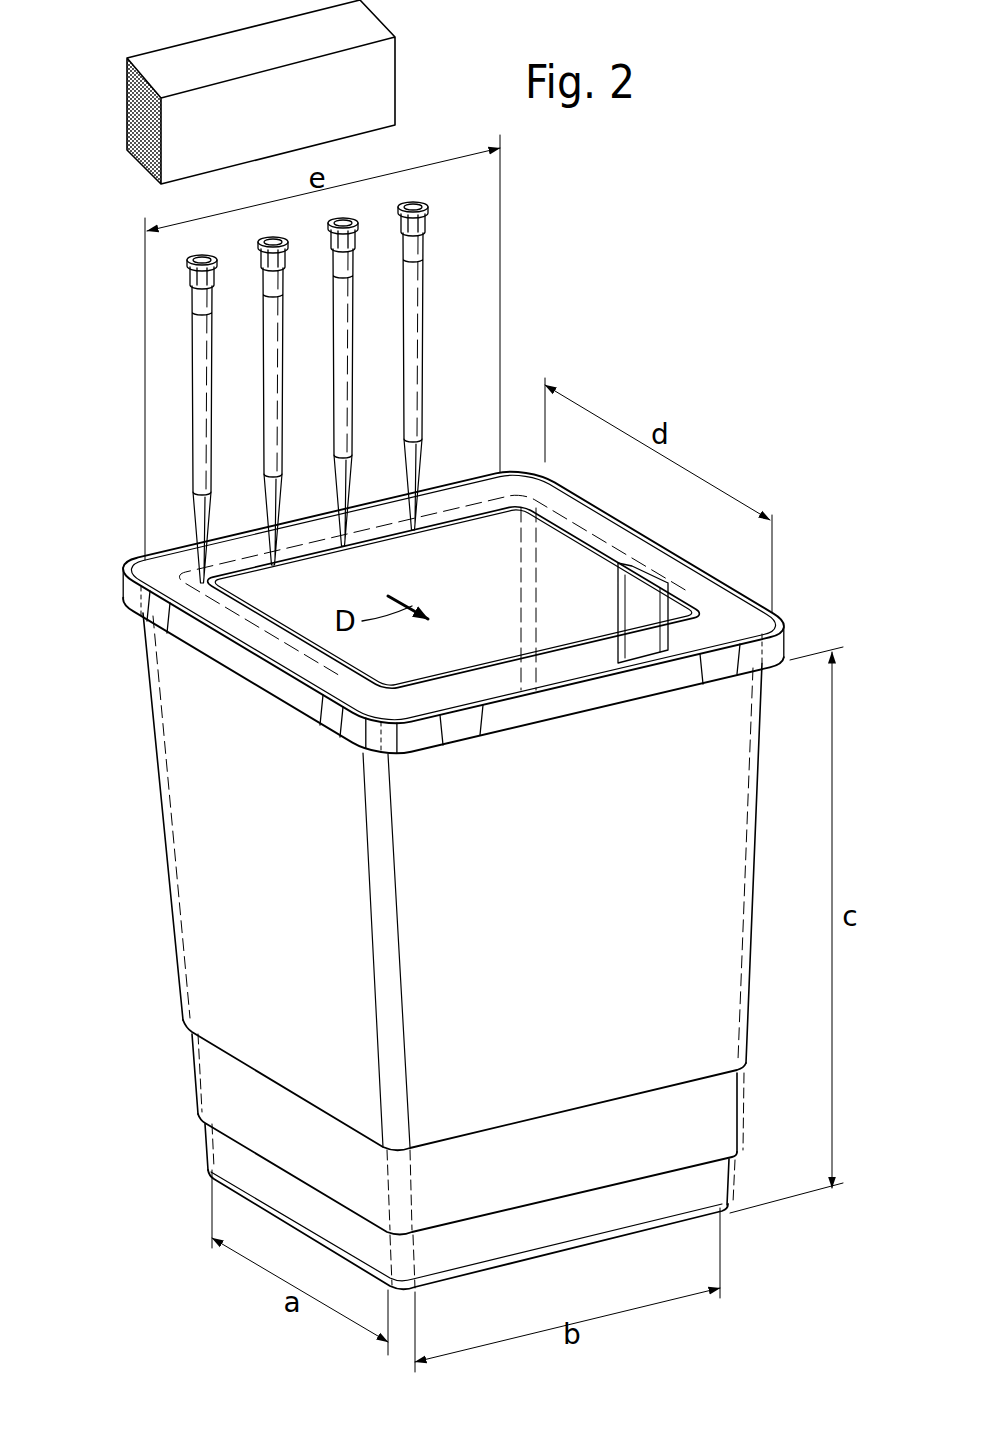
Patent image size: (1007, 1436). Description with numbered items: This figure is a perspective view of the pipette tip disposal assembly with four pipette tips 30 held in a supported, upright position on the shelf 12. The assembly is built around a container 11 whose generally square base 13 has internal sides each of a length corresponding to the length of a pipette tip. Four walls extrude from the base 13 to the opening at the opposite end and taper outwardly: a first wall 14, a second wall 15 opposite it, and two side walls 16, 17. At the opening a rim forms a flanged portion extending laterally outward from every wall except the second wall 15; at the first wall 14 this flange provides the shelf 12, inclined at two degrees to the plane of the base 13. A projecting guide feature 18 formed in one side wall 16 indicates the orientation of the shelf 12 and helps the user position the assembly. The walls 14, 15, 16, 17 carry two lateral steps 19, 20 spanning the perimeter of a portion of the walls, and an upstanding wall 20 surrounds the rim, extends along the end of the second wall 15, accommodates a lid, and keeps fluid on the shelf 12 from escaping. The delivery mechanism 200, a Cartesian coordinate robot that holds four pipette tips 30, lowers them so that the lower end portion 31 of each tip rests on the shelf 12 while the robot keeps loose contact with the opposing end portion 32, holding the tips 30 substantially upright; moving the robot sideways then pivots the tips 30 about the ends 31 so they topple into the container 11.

The container 11 is at (450, 874).
The shelf 12 is at (245, 568).
The base 13 is at (572, 1247).
The first wall 14 is at (317, 662).
The second wall 15 is at (683, 943).
The side wall 16 is at (588, 560).
The side wall 17 is at (205, 898).
The projecting guide feature 18 is at (650, 595).
The lateral step 19 is at (258, 1070).
The upstanding wall 20 is at (205, 636).
The pipette tip 30 is at (333, 387).
The lower end portion 31 is at (441, 459).
The opposing end portion 32 is at (439, 217).
The delivery mechanism 200 is at (190, 158).